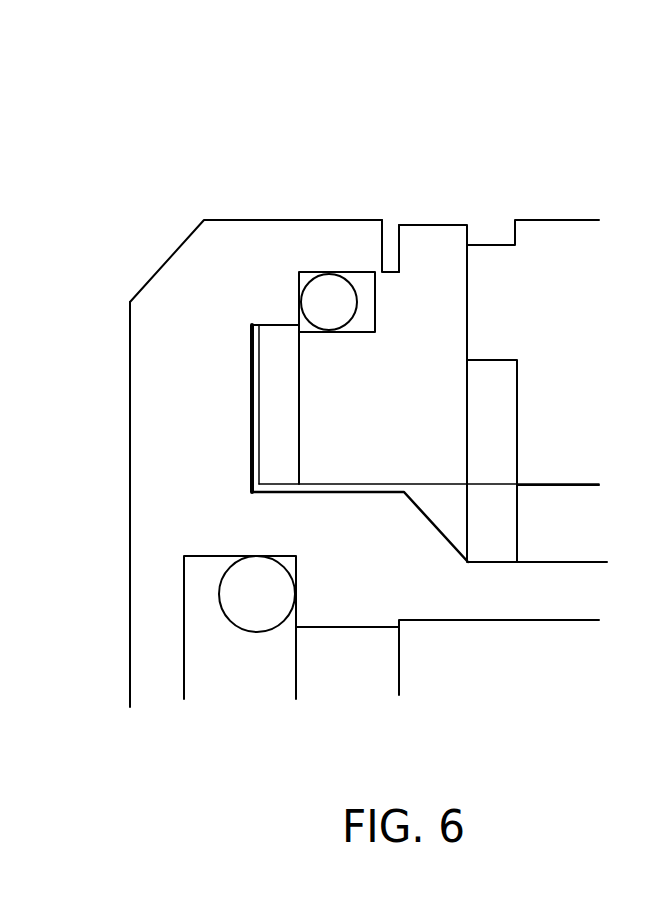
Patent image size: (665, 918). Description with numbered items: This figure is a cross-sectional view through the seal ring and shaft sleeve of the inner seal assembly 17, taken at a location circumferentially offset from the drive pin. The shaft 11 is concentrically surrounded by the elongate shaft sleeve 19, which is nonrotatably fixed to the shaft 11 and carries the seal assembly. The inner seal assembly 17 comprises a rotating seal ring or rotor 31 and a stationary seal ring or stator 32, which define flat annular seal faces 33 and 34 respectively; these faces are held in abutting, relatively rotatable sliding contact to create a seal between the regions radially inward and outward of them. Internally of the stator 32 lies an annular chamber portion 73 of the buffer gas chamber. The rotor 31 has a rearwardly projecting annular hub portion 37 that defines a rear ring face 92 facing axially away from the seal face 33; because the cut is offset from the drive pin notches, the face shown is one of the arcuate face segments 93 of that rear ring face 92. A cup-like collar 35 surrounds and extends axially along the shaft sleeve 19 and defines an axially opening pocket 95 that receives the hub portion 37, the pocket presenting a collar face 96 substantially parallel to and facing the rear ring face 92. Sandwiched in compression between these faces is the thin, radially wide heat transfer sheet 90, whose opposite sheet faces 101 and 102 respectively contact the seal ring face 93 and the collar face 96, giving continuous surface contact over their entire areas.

The inner seal assembly 17 is at (484, 136).
The cup-like collar 35 is at (214, 232).
The seal face of stator 34 is at (465, 290).
The stationary seal ring (stator) 32 is at (576, 243).
The hub portion 37 is at (355, 373).
The heat transfer sheet 90 is at (264, 333).
The sheet face 101 is at (257, 345).
The rear ring face 92 is at (257, 406).
The sheet face 102 is at (250, 384).
The collar face 96 is at (248, 438).
The pocket 95 is at (367, 487).
The seal face of rotor 33 is at (466, 417).
The rotating seal ring (rotor) 31 is at (427, 428).
The annular chamber portion 73 is at (555, 530).
The shaft sleeve 19 is at (522, 595).
The shaft 11 is at (332, 660).
The arcuate face segments 93 is at (252, 448).